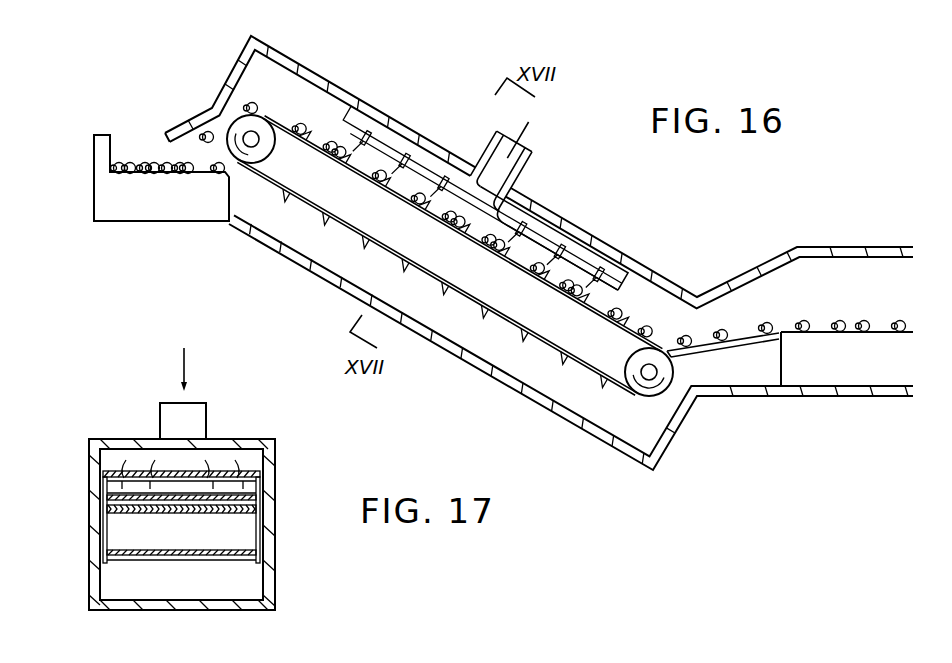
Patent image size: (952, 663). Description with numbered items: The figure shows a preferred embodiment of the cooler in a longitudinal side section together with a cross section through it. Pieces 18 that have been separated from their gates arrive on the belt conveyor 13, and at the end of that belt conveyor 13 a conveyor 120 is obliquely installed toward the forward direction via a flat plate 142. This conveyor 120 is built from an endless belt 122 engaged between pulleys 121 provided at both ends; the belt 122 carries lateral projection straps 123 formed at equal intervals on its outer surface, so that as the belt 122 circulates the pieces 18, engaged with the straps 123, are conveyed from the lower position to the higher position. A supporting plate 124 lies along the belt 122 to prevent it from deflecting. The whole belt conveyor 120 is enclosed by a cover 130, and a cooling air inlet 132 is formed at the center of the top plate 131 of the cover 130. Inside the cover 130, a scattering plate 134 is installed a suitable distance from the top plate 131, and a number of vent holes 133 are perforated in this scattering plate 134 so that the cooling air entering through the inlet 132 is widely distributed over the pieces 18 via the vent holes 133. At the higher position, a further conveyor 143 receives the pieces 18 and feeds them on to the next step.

In FIG. 16, the belt conveyor 13 is at (827, 380).
In FIG. 16, the pieces 18 is at (865, 323).
In FIG. 16, the conveyor 120 is at (392, 266).
In FIG. 17, the conveyor 120 is at (185, 559).
In FIG. 16, the pulleys 121 is at (258, 150).
In FIG. 16, the endless belt 122 is at (558, 345).
In FIG. 17, the endless belt 122 is at (253, 508).
In FIG. 16, the lateral projection straps 123 is at (453, 292).
In FIG. 17, the lateral projection straps 123 is at (250, 560).
In FIG. 16, the supporting plate 124 is at (427, 223).
In FIG. 17, the supporting plate 124 is at (105, 513).
In FIG. 16, the cover 130 is at (539, 253).
In FIG. 17, the cover 130 is at (206, 504).
In FIG. 16, the top plate 131 is at (618, 250).
In FIG. 17, the top plate 131 is at (263, 440).
In FIG. 16, the cooling air inlet 132 is at (533, 150).
In FIG. 17, the cooling air inlet 132 is at (165, 413).
In FIG. 16, the vent holes 133 is at (350, 131).
In FIG. 17, the vent holes 133 is at (247, 465).
In FIG. 16, the scattering plate 134 is at (500, 210).
In FIG. 17, the scattering plate 134 is at (170, 472).
In FIG. 16, the flat plate 142 is at (745, 337).
In FIG. 16, the conveyor 143 is at (200, 210).